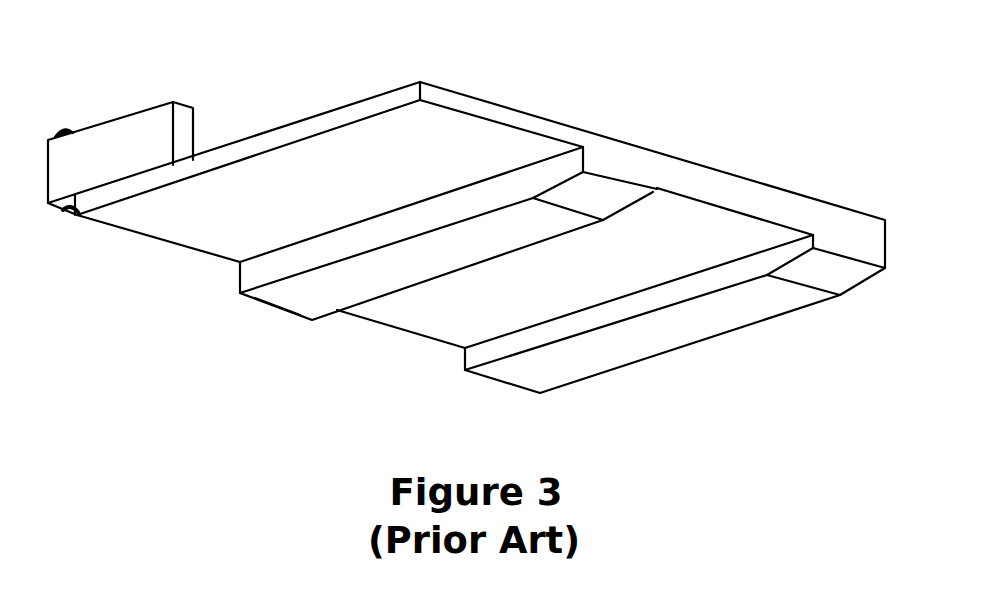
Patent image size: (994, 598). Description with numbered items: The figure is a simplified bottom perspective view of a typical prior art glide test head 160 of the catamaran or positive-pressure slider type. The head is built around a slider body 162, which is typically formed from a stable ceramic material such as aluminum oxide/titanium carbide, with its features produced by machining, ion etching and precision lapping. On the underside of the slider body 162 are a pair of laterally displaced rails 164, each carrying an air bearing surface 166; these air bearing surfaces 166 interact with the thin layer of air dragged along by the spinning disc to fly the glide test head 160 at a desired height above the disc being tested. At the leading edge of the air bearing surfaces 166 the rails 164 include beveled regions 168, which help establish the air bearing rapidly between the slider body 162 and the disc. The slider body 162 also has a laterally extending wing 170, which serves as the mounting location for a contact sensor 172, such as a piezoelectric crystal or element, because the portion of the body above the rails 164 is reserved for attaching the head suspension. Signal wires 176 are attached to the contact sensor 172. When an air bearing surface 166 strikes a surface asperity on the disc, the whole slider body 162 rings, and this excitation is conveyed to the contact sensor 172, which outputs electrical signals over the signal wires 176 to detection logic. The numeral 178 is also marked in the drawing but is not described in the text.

The glide test head 160 is at (727, 112).
The slider body 162 is at (612, 152).
The rails 164 is at (367, 235).
The air bearing surfaces 166 is at (398, 265).
The beveled regions 168 is at (593, 197).
The wing 170 is at (390, 143).
The contact sensor 172 is at (100, 153).
The signal wires 176 is at (70, 217).
The flange surface 178 is at (293, 300).